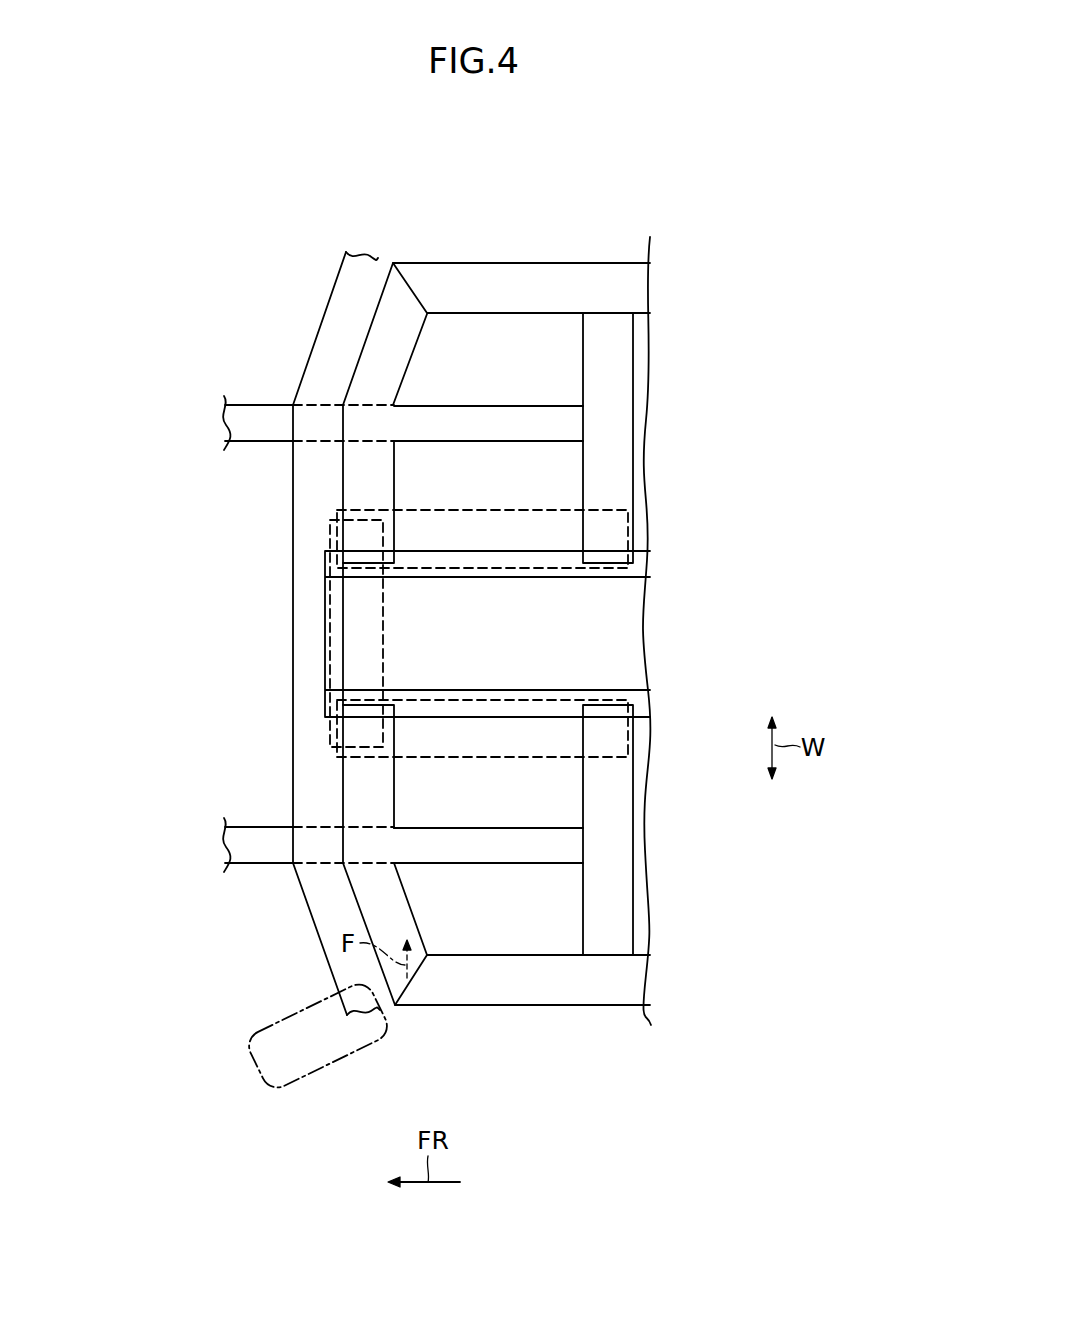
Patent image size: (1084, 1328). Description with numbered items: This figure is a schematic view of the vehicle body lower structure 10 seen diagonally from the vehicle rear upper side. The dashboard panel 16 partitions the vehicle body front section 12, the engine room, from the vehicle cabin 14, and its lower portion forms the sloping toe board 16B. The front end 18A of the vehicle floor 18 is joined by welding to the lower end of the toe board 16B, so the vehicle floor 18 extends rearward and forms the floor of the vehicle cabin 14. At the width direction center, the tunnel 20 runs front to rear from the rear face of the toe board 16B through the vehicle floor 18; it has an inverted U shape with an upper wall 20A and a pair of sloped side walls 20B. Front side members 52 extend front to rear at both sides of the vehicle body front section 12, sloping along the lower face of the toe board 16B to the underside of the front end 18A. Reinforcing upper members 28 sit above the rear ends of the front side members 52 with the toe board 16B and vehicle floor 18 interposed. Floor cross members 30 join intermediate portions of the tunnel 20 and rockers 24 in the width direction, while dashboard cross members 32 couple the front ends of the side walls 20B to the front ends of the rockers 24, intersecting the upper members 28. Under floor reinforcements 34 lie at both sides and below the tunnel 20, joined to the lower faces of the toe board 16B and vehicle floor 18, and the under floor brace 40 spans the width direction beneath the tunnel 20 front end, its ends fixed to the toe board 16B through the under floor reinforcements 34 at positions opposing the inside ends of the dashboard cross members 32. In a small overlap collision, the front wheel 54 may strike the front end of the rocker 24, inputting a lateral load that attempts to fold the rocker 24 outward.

The vehicle body lower structure 10 is at (447, 210).
The vehicle body front section 12 is at (203, 310).
The vehicle cabin 14 is at (482, 356).
The dashboard panel 16 is at (317, 310).
The toe board 16B is at (338, 393).
The vehicle floor 18 is at (530, 352).
The front end of vehicle floor 18A is at (420, 375).
The tunnel 20 is at (627, 632).
The upper wall 20A is at (435, 657).
The side walls 20B is at (538, 558).
The rocker 24 is at (503, 260).
The upper member 28 is at (494, 422).
The floor cross member 30 is at (636, 353).
The dashboard cross member 32 is at (384, 468).
The under floor reinforcement 34 is at (498, 530).
The under floor brace 40 is at (372, 612).
The front side member 52 is at (250, 404).
The front wheel 54 is at (304, 1094).